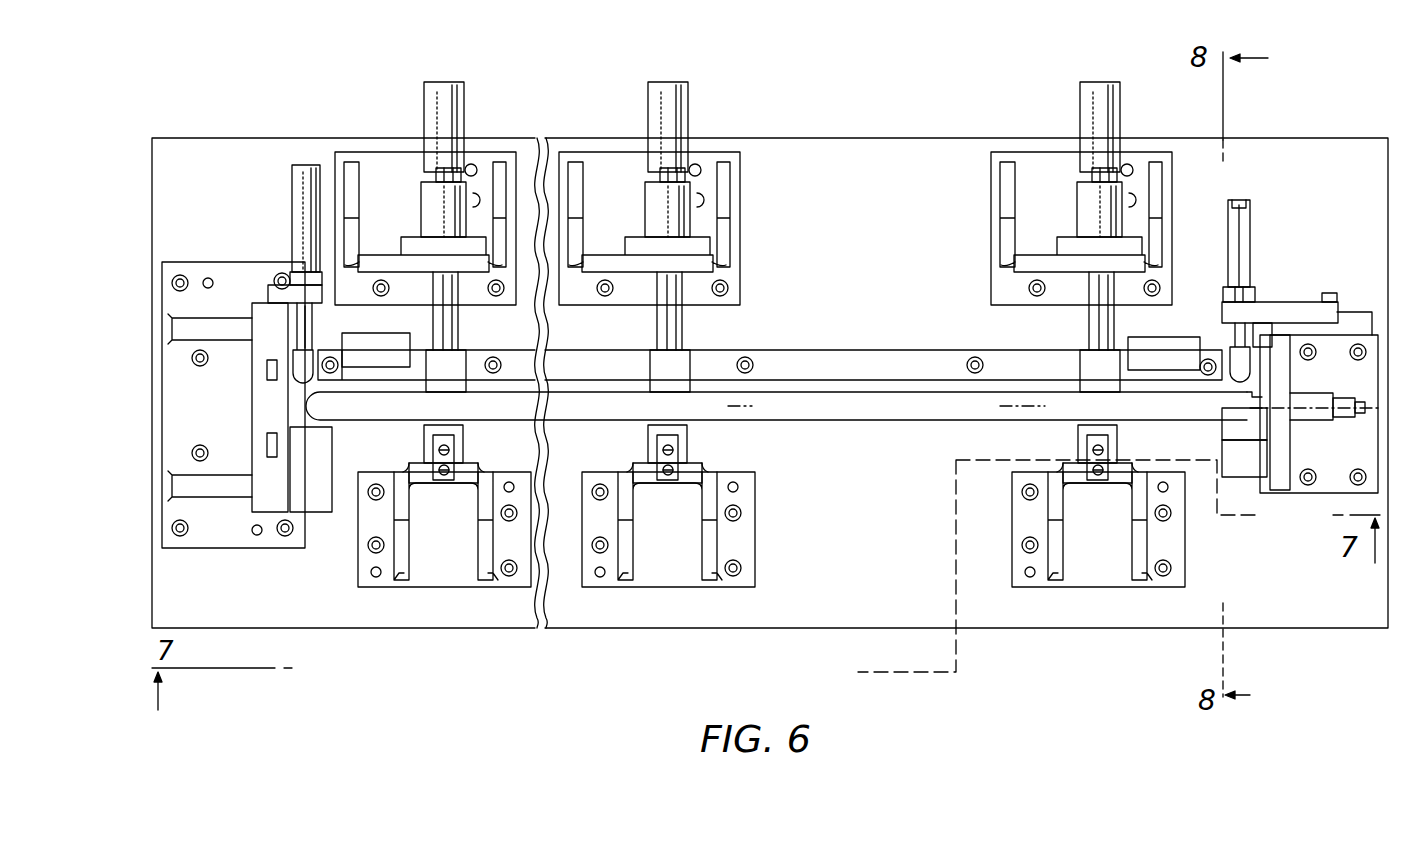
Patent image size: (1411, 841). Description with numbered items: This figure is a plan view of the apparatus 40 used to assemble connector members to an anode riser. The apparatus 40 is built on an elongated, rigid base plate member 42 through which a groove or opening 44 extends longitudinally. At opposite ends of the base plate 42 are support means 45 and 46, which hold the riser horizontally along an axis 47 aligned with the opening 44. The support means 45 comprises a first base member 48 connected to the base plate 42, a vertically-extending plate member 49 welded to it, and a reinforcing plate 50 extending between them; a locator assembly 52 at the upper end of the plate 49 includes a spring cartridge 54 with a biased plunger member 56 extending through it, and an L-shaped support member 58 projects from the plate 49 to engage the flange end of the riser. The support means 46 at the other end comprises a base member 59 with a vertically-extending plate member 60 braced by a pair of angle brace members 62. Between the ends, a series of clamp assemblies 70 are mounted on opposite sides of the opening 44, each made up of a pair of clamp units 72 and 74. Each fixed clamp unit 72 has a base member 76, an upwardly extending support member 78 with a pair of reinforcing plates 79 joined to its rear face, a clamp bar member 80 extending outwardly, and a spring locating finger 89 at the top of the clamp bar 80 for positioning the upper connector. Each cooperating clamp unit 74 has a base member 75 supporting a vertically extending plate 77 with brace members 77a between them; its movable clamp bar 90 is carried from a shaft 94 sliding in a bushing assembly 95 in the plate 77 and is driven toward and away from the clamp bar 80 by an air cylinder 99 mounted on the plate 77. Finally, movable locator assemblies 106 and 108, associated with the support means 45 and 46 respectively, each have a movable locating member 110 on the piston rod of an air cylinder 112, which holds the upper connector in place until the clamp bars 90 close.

The apparatus 40 is at (865, 93).
The base plate member 42 is at (1043, 632).
The through groove or opening 44 is at (883, 419).
The first support means 45 is at (1271, 371).
The support means 46 is at (247, 373).
The axis 47 is at (773, 420).
The first base member 48 is at (1292, 493).
The vertically-extending plate member 49 is at (1283, 370).
The reinforcing plate 50 is at (1372, 283).
The locator assembly 52 is at (1227, 442).
The spring cartridge 54 is at (1283, 450).
The plunger member 56 is at (1333, 420).
The L-shaped support member 58 is at (1235, 477).
The base member 59 is at (212, 540).
The vertically-extending plate member 60 is at (260, 402).
The angle brace members 62 is at (222, 327).
The clamp assemblies 70 is at (393, 632).
The clamp unit 72 is at (744, 520).
The clamp unit 74 is at (726, 216).
The base member 75 is at (460, 296).
The base member 76 is at (465, 583).
The vertically extending plate 77 is at (410, 273).
The brace members 77a is at (353, 212).
The upwardly extending support member 78 is at (470, 467).
The reinforcing plates 79 is at (483, 558).
The clamp bar member 80 is at (427, 442).
The spring locating finger 89 is at (460, 435).
The movable clamp bar 90 is at (457, 353).
The shaft 94 is at (1113, 318).
The bearing or bushing assembly 95 is at (1085, 215).
The air cylinder 99 is at (1120, 123).
The movable locator assembly 106 is at (1253, 242).
The movable locator assembly 108 is at (283, 203).
The movable locating member 110 is at (318, 372).
The air cylinder 112 is at (297, 258).